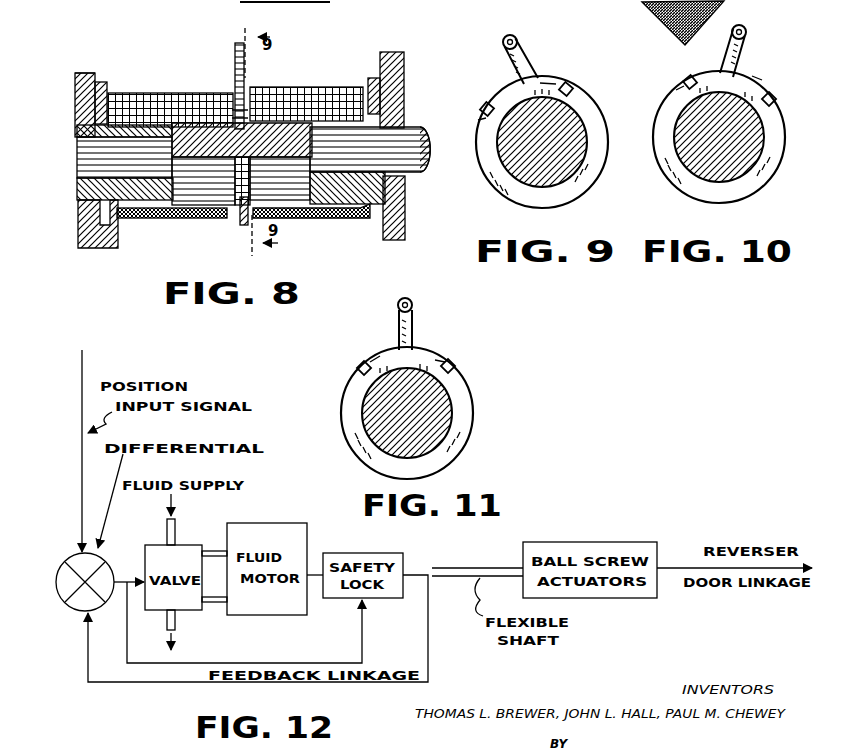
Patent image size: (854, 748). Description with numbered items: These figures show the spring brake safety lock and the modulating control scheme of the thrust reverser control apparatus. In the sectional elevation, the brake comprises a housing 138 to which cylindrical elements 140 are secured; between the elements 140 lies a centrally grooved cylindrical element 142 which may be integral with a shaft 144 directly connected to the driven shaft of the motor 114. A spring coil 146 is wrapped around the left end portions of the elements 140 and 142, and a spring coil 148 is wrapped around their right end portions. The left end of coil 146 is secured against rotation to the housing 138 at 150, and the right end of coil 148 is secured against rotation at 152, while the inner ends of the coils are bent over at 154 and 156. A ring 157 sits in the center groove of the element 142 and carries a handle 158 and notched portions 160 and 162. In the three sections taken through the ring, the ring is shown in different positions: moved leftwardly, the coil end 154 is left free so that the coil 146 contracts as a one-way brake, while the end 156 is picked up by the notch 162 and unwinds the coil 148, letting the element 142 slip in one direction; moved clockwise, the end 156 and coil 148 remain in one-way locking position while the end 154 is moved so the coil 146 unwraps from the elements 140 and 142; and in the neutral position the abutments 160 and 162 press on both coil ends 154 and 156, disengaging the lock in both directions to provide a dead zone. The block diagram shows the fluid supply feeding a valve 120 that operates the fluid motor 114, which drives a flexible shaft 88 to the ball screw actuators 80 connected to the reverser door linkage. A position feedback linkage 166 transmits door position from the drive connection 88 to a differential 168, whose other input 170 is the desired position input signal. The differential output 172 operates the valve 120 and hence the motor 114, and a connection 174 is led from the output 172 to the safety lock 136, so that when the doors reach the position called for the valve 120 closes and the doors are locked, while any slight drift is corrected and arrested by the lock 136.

In FIG. 12, the actuator 80 is at (543, 542).
In FIG. 12, the flexible drive shaft 88 is at (425, 570).
In FIG. 12, the pneumatic motor 114 is at (250, 614).
In FIG. 12, the control valve 120 is at (180, 616).
In FIG. 8, the spring brake assembly 136 is at (92, 73).
In FIG. 12, the spring brake assembly 136 is at (366, 553).
In FIG. 8, the housing 138 is at (75, 95).
In FIG. 8, the cylindrical elements 140 is at (140, 212).
In FIG. 8, the centrally grooved cylindrical element 142 is at (302, 220).
In FIG. 9, the centrally grooved cylindrical element 142 is at (515, 178).
In FIG. 10, the centrally grooved cylindrical element 142 is at (731, 172).
In FIG. 11, the centrally grooved cylindrical element 142 is at (445, 409).
In FIG. 8, the shaft 144 is at (400, 128).
In FIG. 8, the spring coil 146 is at (128, 93).
In FIG. 8, the spring coil 148 is at (270, 88).
In FIG. 8, the coil anchoring point 150 is at (80, 130).
In FIG. 8, the coil anchoring point 152 is at (382, 88).
In FIG. 8, the bent-over coil end 154 is at (236, 95).
In FIG. 9, the bent-over coil end 154 is at (497, 92).
In FIG. 10, the bent-over coil end 154 is at (700, 70).
In FIG. 11, the bent-over coil end 154 is at (360, 366).
In FIG. 9, the bent-over coil end 156 is at (570, 84).
In FIG. 10, the bent-over coil end 156 is at (768, 90).
In FIG. 11, the bent-over coil end 156 is at (448, 362).
In FIG. 8, the ring 157 is at (240, 225).
In FIG. 9, the ring 157 is at (560, 205).
In FIG. 10, the ring 157 is at (690, 196).
In FIG. 11, the ring 157 is at (470, 420).
In FIG. 9, the handle 158 is at (518, 40).
In FIG. 10, the handle 158 is at (746, 36).
In FIG. 11, the handle 158 is at (413, 312).
In FIG. 9, the notched portion 160 is at (480, 118).
In FIG. 10, the notched portion 160 is at (680, 88).
In FIG. 11, the notched portion 160 is at (358, 370).
In FIG. 9, the notched portion 162 is at (552, 82).
In FIG. 10, the notched portion 162 is at (780, 96).
In FIG. 11, the notched portion 162 is at (455, 368).
In FIG. 12, the position feedback linkage 166 is at (138, 686).
In FIG. 12, the differential 168 is at (76, 607).
In FIG. 12, the desired position input 170 is at (81, 500).
In FIG. 12, the differential output 172 is at (124, 580).
In FIG. 12, the connection 174 is at (252, 663).